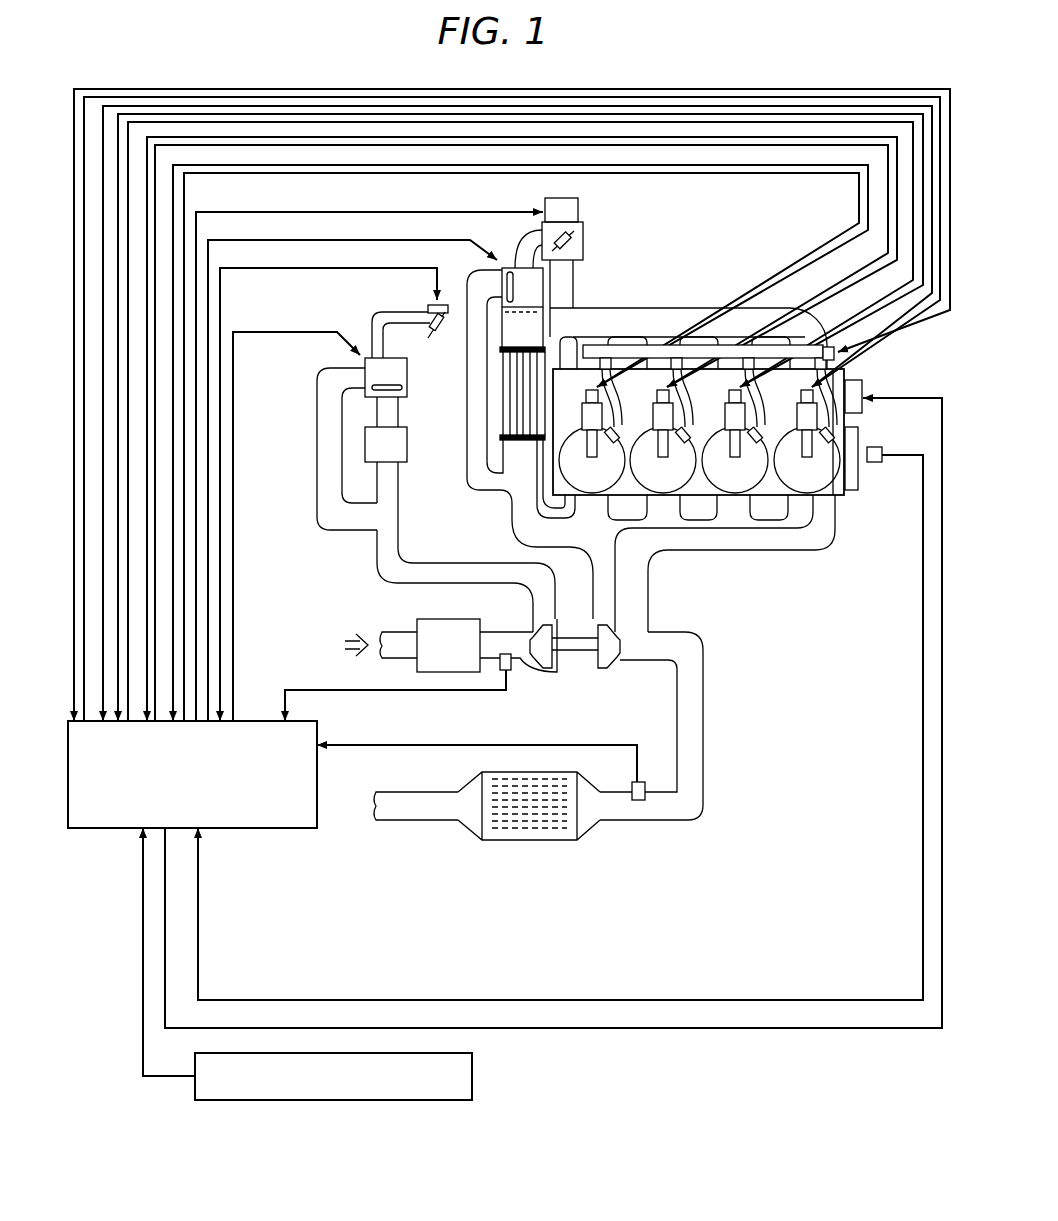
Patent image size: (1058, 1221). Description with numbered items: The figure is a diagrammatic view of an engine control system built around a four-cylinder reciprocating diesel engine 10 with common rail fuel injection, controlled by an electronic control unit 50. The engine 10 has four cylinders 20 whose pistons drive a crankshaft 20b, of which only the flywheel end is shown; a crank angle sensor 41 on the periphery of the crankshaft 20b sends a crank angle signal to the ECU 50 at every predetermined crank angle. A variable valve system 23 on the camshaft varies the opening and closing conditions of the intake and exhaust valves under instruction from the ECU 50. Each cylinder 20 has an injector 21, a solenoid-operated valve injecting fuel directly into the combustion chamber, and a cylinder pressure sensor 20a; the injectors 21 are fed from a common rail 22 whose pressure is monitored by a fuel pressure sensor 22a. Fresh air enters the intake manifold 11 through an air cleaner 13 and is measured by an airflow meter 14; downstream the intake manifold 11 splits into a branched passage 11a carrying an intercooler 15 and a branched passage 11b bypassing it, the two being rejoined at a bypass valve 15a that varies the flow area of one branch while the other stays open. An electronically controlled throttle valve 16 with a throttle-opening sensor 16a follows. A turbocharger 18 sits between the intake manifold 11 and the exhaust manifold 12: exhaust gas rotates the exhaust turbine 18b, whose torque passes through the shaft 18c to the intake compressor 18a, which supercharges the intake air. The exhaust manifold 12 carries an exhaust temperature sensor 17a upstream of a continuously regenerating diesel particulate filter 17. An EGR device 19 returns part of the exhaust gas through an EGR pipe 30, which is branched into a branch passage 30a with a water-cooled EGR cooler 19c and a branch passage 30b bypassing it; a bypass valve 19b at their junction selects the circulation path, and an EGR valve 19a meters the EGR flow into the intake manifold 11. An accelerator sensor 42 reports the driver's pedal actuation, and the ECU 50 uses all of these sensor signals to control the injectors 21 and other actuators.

The diesel engine 10 is at (684, 298).
The intake manifold 11 is at (377, 553).
The branched passage 11a is at (398, 410).
The branched passage 11b is at (317, 440).
The exhaust manifold 12 is at (748, 555).
The air cleaner 13 is at (422, 619).
The airflow meter 14 is at (507, 672).
The intercooler 15 is at (407, 450).
The bypass valve 15a is at (407, 366).
The throttle valve 16 is at (377, 325).
The throttle-opening sensor 16a is at (432, 312).
The diesel particulate filter 17 is at (526, 840).
The exhaust temperature sensor 17a is at (640, 782).
The turbocharger 18 is at (632, 604).
The intake compressor 18a is at (540, 662).
The exhaust turbine 18b is at (622, 626).
The shaft 18c is at (580, 652).
The EGR device 19 is at (588, 226).
The EGR valve 19a is at (585, 243).
The bypass valve 19b is at (497, 262).
The EGR cooler 19c is at (503, 432).
The cylinder 20 is at (818, 483).
The cylinder pressure sensor 20a is at (858, 442).
The crankshaft 20b is at (852, 496).
The injector 21 is at (583, 410).
The common rail 22 is at (590, 345).
The fuel pressure sensor 22a is at (836, 350).
The variable valve system 23 is at (862, 392).
The EGR pipe 30 is at (518, 240).
The branch passage 30a is at (520, 452).
The branch passage 30b is at (467, 490).
The crank angle sensor 41 is at (877, 463).
The accelerator sensor 42 is at (472, 1066).
The electronic control unit 50 is at (282, 828).